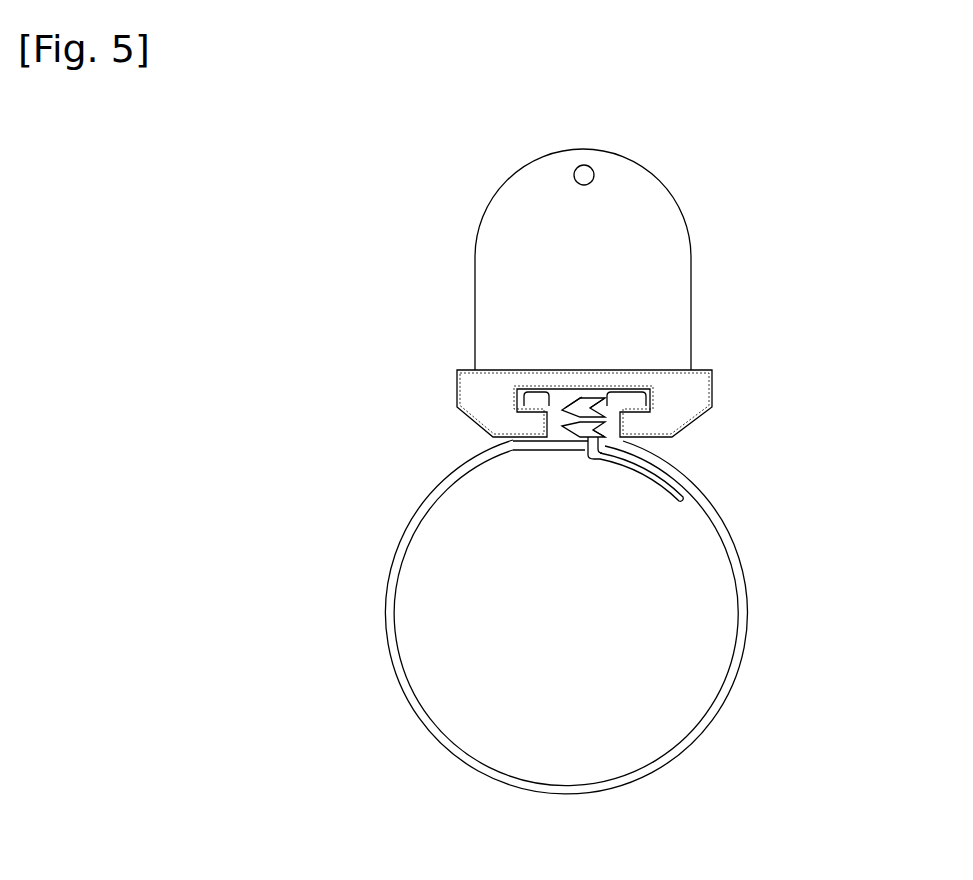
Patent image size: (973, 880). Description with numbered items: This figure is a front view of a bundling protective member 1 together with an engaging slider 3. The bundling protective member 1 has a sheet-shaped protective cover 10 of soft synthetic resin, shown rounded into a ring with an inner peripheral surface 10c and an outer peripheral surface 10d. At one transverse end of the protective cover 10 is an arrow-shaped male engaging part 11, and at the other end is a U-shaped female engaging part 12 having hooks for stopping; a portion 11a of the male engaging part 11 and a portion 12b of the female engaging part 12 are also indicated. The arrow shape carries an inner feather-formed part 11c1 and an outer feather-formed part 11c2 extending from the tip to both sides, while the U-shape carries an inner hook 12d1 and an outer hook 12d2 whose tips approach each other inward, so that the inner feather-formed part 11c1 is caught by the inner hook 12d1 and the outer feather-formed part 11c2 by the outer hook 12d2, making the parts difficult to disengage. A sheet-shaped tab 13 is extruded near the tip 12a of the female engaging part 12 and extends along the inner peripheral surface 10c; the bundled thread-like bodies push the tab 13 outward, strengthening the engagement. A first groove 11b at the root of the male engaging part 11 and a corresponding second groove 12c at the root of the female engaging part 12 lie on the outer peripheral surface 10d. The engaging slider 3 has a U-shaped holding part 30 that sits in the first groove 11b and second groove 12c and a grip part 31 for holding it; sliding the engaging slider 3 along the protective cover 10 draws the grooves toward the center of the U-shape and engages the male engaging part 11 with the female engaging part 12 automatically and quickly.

The bundling protective member 1 is at (855, 526).
The engaging slider 3 is at (840, 240).
The protective cover 10 is at (743, 567).
The inner peripheral surface 10c is at (702, 510).
The outer peripheral surface 10d is at (712, 500).
The male engaging part 11 is at (563, 420).
The bent portion 11a is at (627, 448).
The first groove 11b is at (649, 394).
The inner feather-formed part 11c1 is at (565, 428).
The outer feather-formed part 11c2 is at (578, 405).
The female engaging part 12 is at (558, 447).
The tip 12a is at (573, 448).
The connector end portion 12b is at (523, 445).
The second groove 12c is at (522, 393).
The inner hook 12d1 is at (606, 440).
The outer hook 12d2 is at (600, 394).
The tab 13 is at (667, 490).
The holding part 30 is at (697, 392).
The grip part 31 is at (652, 210).